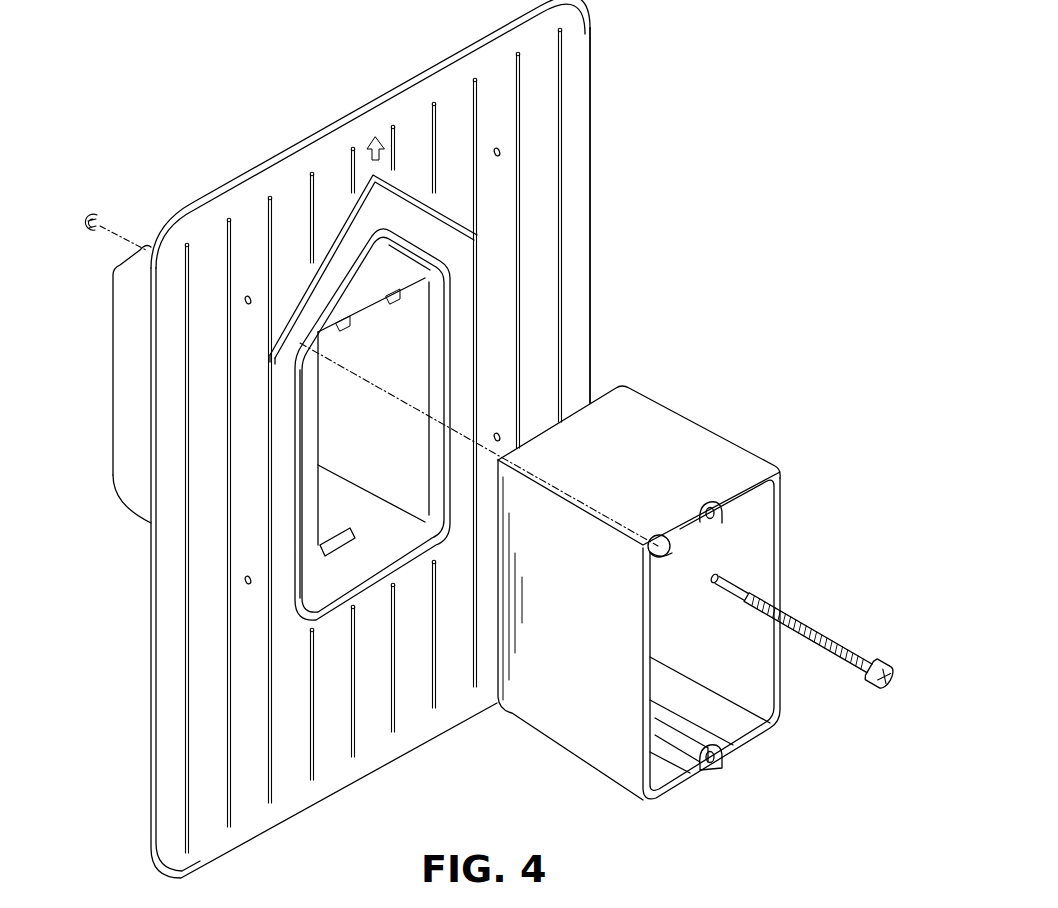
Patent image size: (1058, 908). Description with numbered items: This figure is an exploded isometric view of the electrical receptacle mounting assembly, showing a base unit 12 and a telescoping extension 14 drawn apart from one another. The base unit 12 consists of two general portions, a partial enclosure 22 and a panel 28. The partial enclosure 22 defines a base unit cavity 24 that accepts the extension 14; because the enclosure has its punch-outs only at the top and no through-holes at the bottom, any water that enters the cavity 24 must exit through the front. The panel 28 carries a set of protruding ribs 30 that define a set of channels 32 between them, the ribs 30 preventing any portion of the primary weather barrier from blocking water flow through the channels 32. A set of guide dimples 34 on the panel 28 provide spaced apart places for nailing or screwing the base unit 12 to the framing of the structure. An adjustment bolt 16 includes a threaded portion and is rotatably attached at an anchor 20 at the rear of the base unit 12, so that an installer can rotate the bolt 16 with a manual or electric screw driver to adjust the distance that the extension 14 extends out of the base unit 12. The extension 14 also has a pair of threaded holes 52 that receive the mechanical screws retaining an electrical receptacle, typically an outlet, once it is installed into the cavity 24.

The base unit 12 is at (591, 121).
The telescoping extension 14 is at (698, 428).
The adjustment bolt 16 is at (828, 634).
The anchor 20 is at (96, 216).
The partial enclosure 22 is at (437, 367).
The base unit cavity 24 is at (379, 444).
The panel 28 is at (592, 232).
The protruding ribs 30 is at (227, 315).
The channels 32 is at (550, 222).
The guide dimples 34 is at (497, 147).
The threaded holes 52 is at (709, 503).